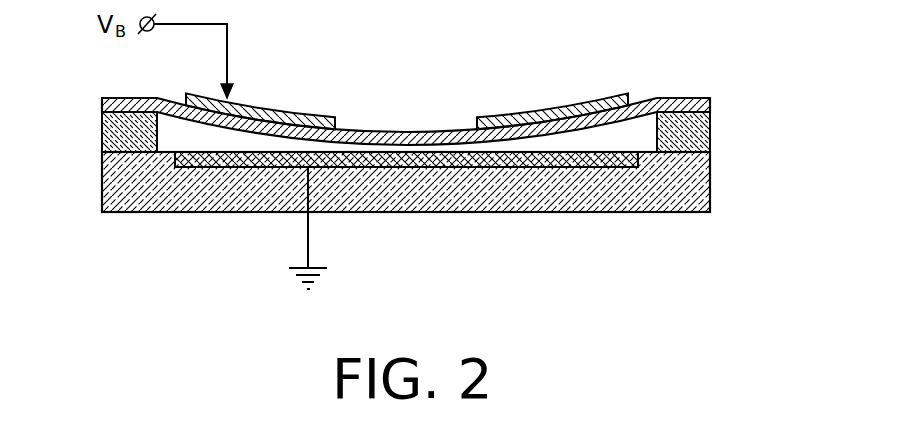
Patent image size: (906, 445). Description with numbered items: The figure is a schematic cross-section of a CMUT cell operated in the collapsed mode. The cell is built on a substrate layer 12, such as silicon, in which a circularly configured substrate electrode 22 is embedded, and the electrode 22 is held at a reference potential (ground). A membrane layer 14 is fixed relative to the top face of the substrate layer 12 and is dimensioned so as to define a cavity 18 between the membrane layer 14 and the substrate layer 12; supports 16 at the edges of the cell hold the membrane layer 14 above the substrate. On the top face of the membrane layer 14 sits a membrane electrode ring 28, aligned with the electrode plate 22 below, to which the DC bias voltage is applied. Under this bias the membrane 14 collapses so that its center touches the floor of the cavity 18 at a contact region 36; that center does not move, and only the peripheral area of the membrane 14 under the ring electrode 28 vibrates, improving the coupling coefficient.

The substrate layer 12 is at (702, 180).
The membrane layer 14 is at (704, 104).
The anchor 16 is at (113, 132).
The cavity 18 is at (642, 125).
The substrate electrode 22 is at (563, 160).
The membrane electrode ring 28 is at (292, 112).
The contact region 36 is at (405, 145).